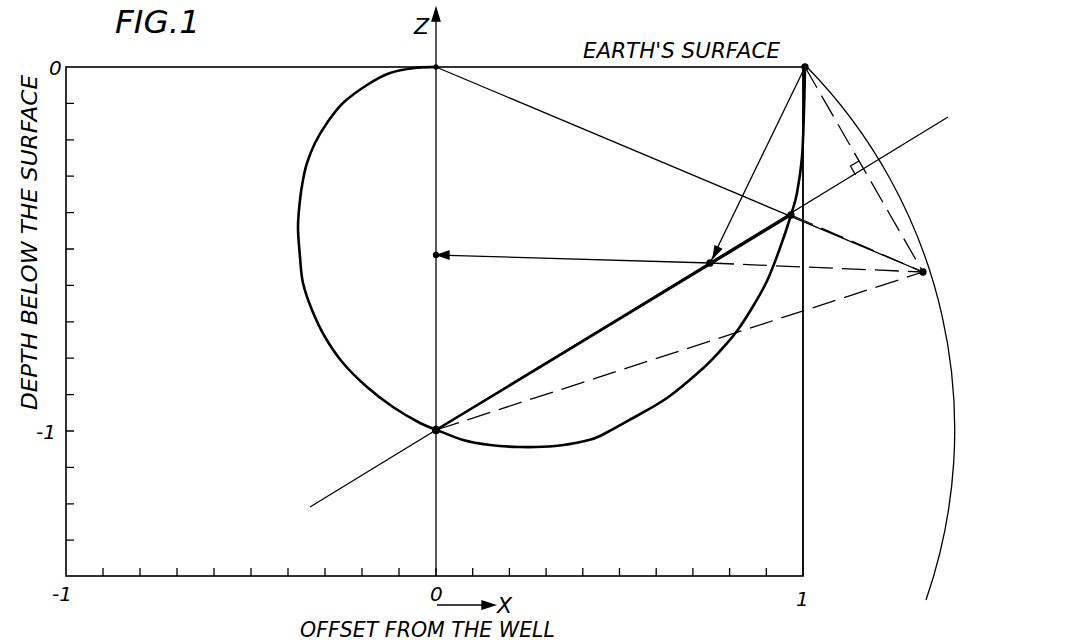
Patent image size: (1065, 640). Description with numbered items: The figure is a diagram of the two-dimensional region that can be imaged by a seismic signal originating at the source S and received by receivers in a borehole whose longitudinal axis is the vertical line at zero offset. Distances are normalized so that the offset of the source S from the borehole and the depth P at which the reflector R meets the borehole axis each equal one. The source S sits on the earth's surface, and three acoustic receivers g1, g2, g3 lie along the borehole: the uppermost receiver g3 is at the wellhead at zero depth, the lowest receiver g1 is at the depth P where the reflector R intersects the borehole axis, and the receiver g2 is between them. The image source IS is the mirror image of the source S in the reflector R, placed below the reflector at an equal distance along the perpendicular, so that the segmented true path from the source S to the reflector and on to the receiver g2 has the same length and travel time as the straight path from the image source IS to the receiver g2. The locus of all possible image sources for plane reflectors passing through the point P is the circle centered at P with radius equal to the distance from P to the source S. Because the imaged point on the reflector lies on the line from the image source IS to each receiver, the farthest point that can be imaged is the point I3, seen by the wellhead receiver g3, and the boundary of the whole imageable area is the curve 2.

The boundary curve of the imageable area 2 is at (306, 166).
The source S is at (814, 58).
The image source IS is at (934, 275).
The reflector R is at (629, 312).
The depth at which the reflector intersects the borehole axis P is at (430, 447).
The farthest imageable point I3 is at (799, 232).
The lowest receiver g1 is at (425, 416).
The intermediate receiver g2 is at (421, 256).
The uppermost receiver g3 is at (451, 55).